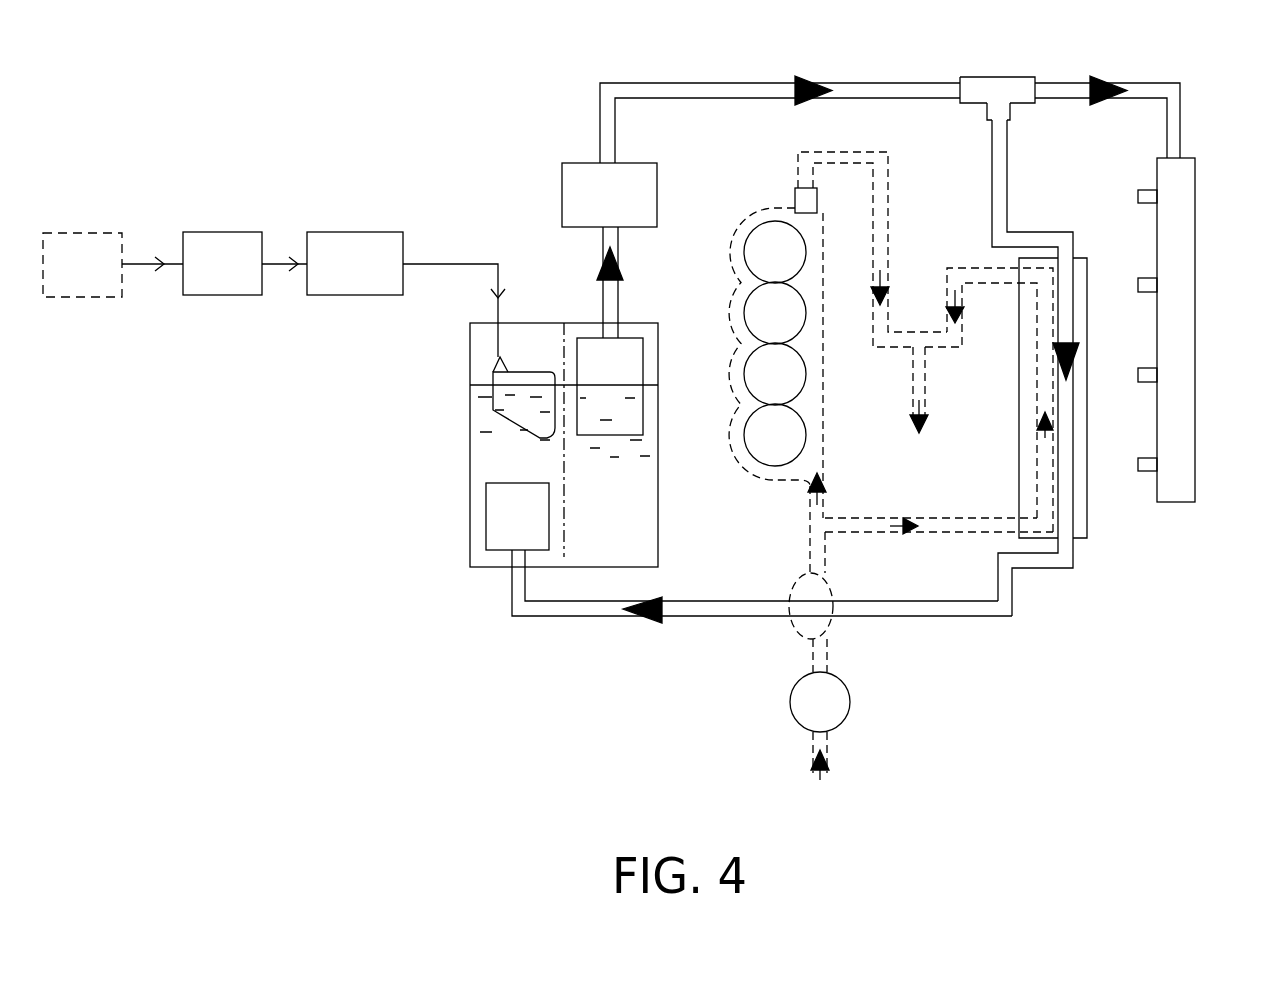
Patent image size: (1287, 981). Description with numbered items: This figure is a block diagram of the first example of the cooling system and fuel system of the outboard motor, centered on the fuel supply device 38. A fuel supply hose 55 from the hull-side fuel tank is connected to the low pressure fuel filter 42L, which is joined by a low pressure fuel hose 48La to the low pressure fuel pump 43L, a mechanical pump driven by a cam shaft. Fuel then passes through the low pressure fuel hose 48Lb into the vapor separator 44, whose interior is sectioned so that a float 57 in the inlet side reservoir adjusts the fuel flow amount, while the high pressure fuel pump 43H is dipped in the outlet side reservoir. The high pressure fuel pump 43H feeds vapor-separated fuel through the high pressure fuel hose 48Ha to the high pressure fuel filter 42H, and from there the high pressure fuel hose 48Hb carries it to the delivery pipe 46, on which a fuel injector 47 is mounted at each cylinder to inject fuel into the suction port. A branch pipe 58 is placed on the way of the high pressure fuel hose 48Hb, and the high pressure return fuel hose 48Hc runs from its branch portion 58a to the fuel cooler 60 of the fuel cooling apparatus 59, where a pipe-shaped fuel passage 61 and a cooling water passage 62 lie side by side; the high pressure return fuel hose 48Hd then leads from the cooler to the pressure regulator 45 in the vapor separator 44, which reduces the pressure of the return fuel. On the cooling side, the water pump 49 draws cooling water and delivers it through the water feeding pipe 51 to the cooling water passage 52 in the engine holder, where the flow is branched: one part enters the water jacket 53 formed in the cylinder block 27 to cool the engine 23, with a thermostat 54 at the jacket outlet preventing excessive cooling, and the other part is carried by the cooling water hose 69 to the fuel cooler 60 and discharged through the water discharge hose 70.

The fuel supply device 38 is at (466, 141).
The engine 23 is at (737, 217).
The cylinder block 27 is at (745, 365).
The low pressure fuel filter 42L is at (235, 295).
The low pressure fuel pump 43L is at (350, 295).
The high pressure fuel filter 42H is at (562, 200).
The high pressure fuel pump 43H is at (633, 340).
The vapor separator 44 is at (470, 437).
The pressure regulator 45 is at (490, 517).
The delivery pipe 46 is at (1183, 237).
The fuel injector 47 is at (1147, 375).
The low pressure fuel hose 48La is at (278, 250).
The low pressure fuel hose 48Lb is at (430, 262).
The high pressure fuel hose 48Ha is at (620, 241).
The high pressure fuel hose 48Hb is at (757, 88).
The high pressure return fuel hose 48Hc is at (1007, 152).
The high pressure return fuel hose 48Hd is at (922, 617).
The water pump 49 is at (850, 700).
The water feeding pipe 51 is at (828, 650).
The cooling water passage 52 is at (828, 573).
The water jacket 53 is at (743, 463).
The thermostat 54 is at (807, 200).
The fuel supply hose 55 is at (138, 264).
The float 57 is at (497, 382).
The branch pipe 58 is at (965, 66).
The branch portion 58a is at (988, 108).
The fuel cooling apparatus 59 is at (1000, 402).
The fuel cooler 60 is at (1163, 650).
The fuel passage 61 is at (1068, 477).
The cooling water passage 62 is at (1047, 533).
The cooling water hose 69 is at (965, 536).
The water discharge hose 70 is at (962, 332).